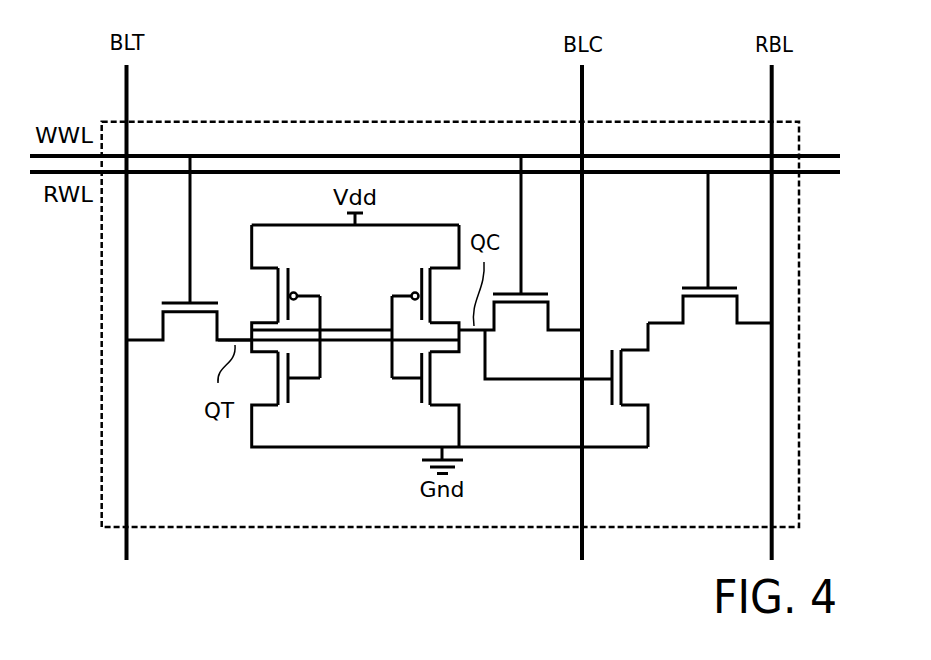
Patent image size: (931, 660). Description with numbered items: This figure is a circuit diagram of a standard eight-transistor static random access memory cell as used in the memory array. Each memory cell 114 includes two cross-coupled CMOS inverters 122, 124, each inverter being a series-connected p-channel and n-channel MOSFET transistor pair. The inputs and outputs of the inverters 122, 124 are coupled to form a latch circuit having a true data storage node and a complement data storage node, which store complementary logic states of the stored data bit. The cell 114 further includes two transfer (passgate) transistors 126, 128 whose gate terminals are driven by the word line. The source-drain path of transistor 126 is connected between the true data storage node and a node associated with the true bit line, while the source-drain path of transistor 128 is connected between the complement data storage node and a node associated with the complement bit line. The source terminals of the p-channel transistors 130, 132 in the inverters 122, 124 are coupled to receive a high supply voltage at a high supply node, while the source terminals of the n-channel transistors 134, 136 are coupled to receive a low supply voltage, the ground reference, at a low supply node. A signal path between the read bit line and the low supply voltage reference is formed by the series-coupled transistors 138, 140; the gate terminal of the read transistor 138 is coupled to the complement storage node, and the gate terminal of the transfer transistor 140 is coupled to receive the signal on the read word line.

The memory cell 114 is at (480, 120).
The CMOS inverter 122 is at (421, 253).
The CMOS inverter 124 is at (396, 252).
The transfer (passgate) transistor 126 is at (192, 320).
The transfer (passgate) transistor 128 is at (519, 310).
The p-channel transistor 130 is at (277, 291).
The p-channel transistor 132 is at (418, 280).
The n-channel transistor 134 is at (293, 403).
The n-channel transistor 136 is at (422, 403).
The read transistor 138 is at (628, 375).
The transfer transistor 140 is at (718, 305).